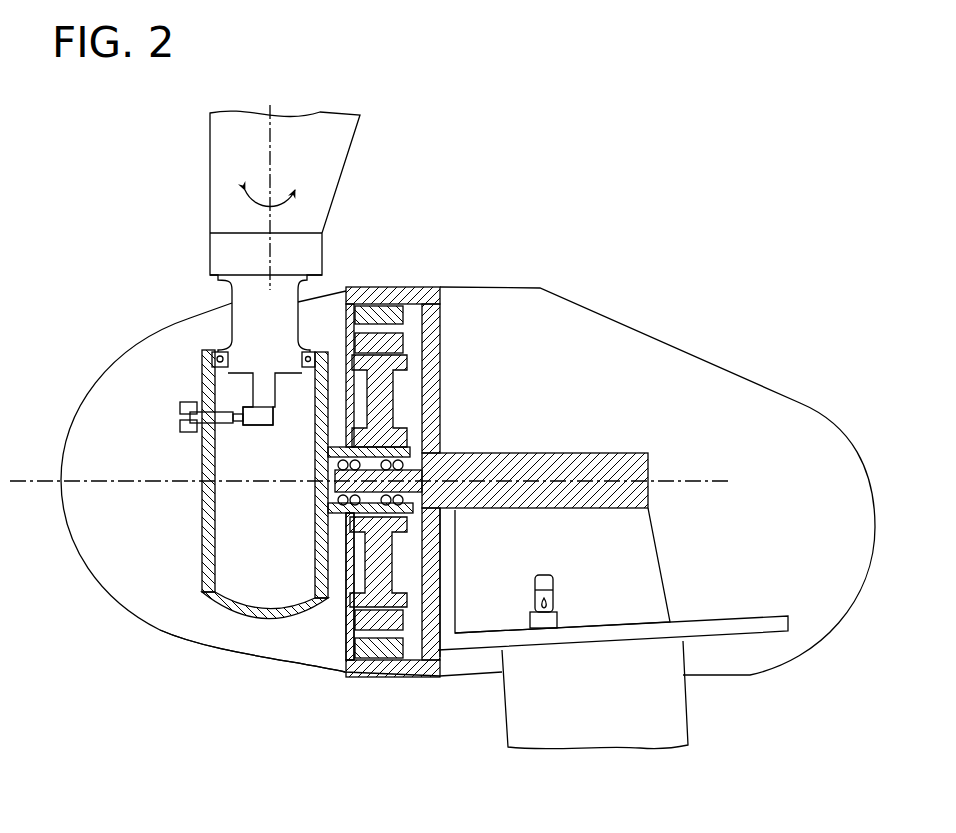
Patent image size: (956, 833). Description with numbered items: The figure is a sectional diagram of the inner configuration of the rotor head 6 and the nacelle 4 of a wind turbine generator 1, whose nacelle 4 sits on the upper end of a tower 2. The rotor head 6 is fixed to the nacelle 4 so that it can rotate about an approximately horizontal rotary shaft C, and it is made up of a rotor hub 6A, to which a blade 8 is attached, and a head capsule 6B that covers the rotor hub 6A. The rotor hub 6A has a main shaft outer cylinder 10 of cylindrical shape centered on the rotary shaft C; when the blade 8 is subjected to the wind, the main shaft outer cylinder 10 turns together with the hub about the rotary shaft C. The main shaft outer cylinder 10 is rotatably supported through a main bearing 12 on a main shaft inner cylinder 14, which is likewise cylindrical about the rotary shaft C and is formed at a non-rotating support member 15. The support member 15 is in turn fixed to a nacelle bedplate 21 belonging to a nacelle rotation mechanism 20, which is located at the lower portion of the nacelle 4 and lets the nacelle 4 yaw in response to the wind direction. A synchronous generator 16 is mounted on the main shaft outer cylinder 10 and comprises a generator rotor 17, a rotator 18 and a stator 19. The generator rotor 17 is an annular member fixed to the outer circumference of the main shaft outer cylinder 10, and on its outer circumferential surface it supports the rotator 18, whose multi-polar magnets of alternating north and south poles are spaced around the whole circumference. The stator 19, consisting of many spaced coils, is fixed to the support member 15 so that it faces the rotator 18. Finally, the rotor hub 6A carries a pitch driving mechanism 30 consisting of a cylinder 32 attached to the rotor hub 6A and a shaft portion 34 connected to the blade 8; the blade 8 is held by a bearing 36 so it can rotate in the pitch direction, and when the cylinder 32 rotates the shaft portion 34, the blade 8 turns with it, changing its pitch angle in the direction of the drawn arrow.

The wind turbine generator 1 is at (702, 190).
The tower 2 is at (683, 716).
The nacelle 4 is at (702, 363).
The rotor head 6 is at (166, 272).
The rotor hub 6A is at (200, 582).
The head capsule 6B is at (218, 648).
The blade 8 is at (210, 152).
The main shaft outer cylinder 10 is at (440, 546).
The main bearing 12 is at (340, 499).
The main shaft inner cylinder 14 is at (338, 467).
The support member 15 is at (522, 453).
The generator 16 is at (414, 334).
The generator rotor 17 is at (322, 612).
The rotator 18 is at (364, 565).
The stator 19 is at (378, 660).
The nacelle rotation mechanism 20 is at (567, 574).
The nacelle bedplate 21 is at (714, 618).
The pitch driving mechanism 30 is at (163, 375).
The cylinder 32 is at (180, 415).
The shaft portion 34 is at (284, 395).
The bearing 36 is at (214, 350).
The rotary shaft C is at (703, 492).